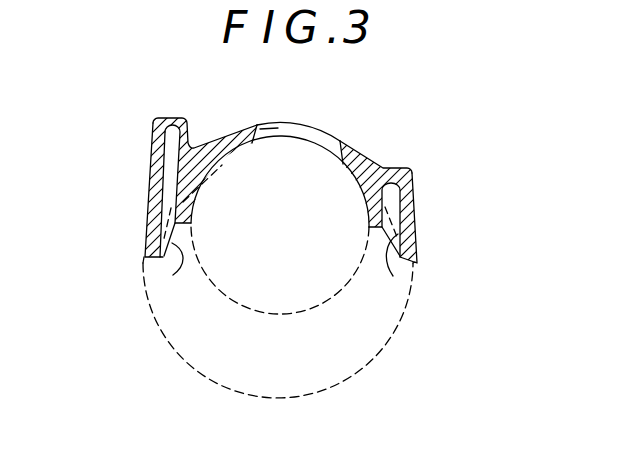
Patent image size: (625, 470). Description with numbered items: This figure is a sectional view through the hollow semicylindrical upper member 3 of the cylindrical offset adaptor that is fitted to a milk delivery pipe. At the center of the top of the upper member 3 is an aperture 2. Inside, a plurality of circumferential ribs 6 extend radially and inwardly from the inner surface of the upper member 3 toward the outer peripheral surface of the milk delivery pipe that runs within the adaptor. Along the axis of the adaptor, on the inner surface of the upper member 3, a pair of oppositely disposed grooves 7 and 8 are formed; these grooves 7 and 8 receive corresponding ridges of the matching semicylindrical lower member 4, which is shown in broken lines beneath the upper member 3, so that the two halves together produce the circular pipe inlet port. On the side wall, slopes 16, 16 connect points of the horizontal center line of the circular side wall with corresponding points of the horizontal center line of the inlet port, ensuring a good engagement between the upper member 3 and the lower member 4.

The aperture 2 is at (247, 128).
The upper member 3 is at (350, 158).
The lower member 4 is at (183, 357).
The circumferential ribs 6 is at (371, 210).
The groove 7 is at (392, 204).
The groove 8 is at (165, 165).
The slopes 16 is at (173, 275).